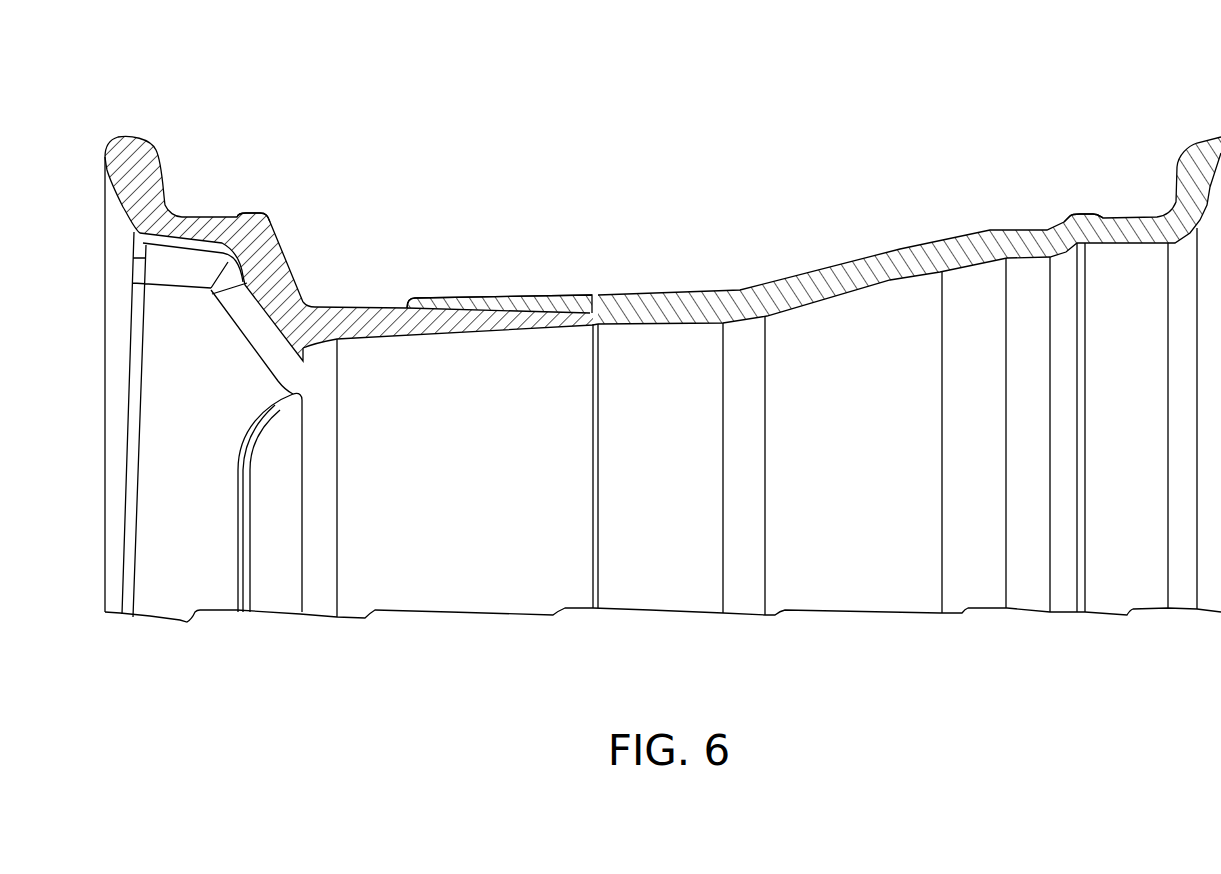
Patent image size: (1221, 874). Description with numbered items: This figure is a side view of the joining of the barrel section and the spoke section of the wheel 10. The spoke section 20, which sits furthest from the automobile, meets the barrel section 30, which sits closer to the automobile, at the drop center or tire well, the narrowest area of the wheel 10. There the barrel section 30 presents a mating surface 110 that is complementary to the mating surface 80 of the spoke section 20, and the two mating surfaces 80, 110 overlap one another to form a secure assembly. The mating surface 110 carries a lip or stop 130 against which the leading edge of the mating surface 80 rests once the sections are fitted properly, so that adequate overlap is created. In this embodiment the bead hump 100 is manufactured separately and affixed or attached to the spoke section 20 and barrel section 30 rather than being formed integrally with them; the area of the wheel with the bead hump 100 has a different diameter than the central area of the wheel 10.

The wheel 10 is at (645, 77).
The spoke section 20 is at (189, 198).
The barrel section 30 is at (742, 282).
The mating surface 80 is at (472, 298).
The bead hump 100 is at (253, 213).
The mating surface 110 is at (453, 330).
The lip or stop 130 is at (563, 297).